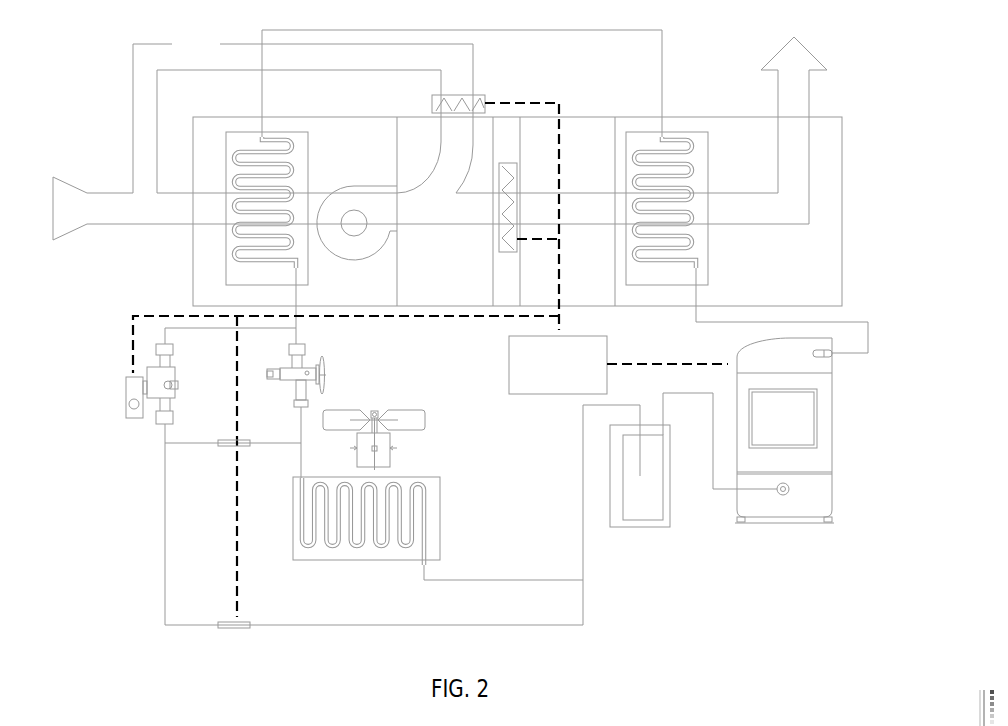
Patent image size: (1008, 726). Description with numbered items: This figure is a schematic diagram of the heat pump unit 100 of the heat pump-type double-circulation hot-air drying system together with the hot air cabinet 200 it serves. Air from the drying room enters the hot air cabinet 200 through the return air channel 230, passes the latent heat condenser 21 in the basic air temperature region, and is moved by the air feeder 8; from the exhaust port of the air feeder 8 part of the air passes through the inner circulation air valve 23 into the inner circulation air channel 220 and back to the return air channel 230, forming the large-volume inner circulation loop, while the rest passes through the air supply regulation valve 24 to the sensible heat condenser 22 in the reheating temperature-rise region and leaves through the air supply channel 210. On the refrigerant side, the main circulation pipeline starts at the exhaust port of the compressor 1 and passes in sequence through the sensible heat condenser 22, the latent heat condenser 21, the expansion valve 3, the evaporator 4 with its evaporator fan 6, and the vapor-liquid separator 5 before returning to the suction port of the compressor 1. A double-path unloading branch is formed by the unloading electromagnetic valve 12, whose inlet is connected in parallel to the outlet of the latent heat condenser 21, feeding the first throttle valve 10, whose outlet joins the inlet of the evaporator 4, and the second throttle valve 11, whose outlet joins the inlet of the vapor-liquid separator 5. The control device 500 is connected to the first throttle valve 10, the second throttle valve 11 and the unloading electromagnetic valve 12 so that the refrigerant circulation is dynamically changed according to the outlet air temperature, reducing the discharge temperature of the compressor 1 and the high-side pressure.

The compressor 1 is at (784, 449).
The expansion valve 3 is at (291, 375).
The evaporator 4 is at (377, 521).
The vapor-liquid separator 5 is at (640, 493).
The evaporator fan 6 is at (374, 440).
The air feeder 8 is at (357, 205).
The first throttle valve 10 is at (230, 428).
The second throttle valve 11 is at (229, 610).
The unloading electromagnetic valve 12 is at (133, 384).
The latent heat condenser 21 is at (252, 187).
The sensible heat condenser 22 is at (683, 176).
The inner circulation air valve 23 is at (445, 97).
The air supply regulation valve 24 is at (523, 207).
The heat pump unit 100 is at (516, 327).
The hot air cabinet 200 is at (464, 193).
The air supply channel 210 is at (794, 116).
The inner circulation air channel 220 is at (303, 104).
The return air channel 230 is at (77, 193).
The control device 500 is at (430, 360).